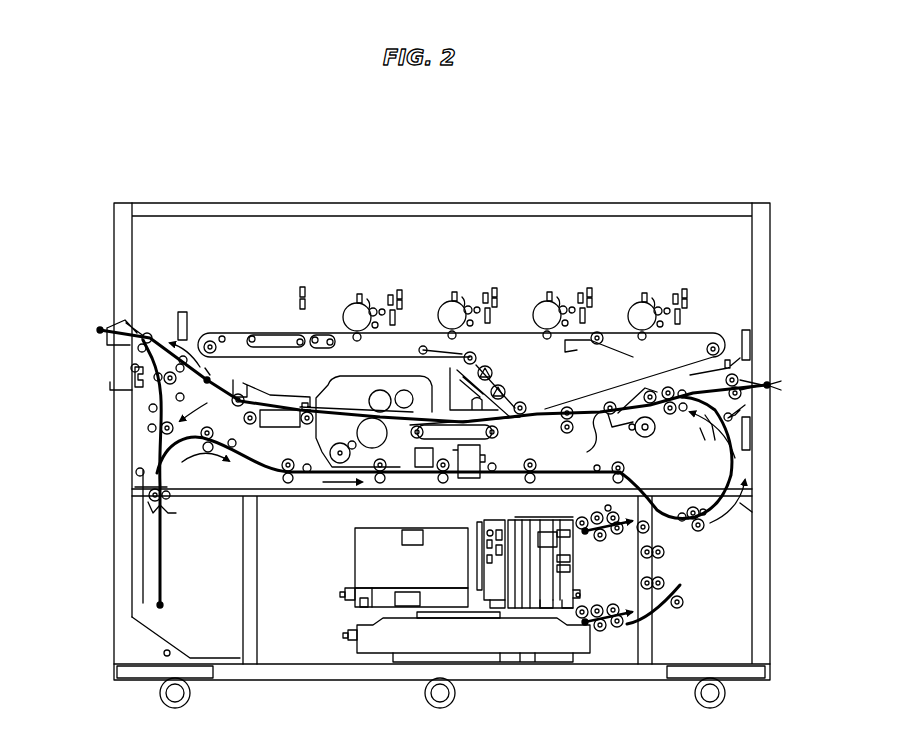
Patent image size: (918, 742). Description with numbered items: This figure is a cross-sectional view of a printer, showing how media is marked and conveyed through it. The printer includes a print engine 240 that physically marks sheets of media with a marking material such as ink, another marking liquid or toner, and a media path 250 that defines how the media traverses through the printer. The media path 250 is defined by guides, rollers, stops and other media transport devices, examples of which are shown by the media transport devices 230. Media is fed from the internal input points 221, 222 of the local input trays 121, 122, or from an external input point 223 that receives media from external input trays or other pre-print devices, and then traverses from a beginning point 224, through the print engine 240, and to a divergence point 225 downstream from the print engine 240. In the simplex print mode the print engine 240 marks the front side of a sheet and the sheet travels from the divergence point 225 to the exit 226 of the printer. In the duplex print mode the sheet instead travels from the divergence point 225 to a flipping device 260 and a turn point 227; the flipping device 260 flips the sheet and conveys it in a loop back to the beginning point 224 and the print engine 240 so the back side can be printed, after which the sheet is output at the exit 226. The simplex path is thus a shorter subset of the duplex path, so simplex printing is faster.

The print engine 240 is at (412, 385).
The media path 250 is at (540, 408).
The media transport devices 230 is at (537, 463).
The divergence point 225 is at (209, 378).
The exit 226 is at (100, 328).
The turn point 227 is at (162, 606).
The flipping device 260 is at (148, 494).
The external input point 223 is at (781, 388).
The beginning point 224 is at (737, 458).
The internal input point 221 is at (585, 531).
The internal input point 222 is at (585, 622).
The local input tray 121 is at (355, 548).
The local input tray 122 is at (357, 632).